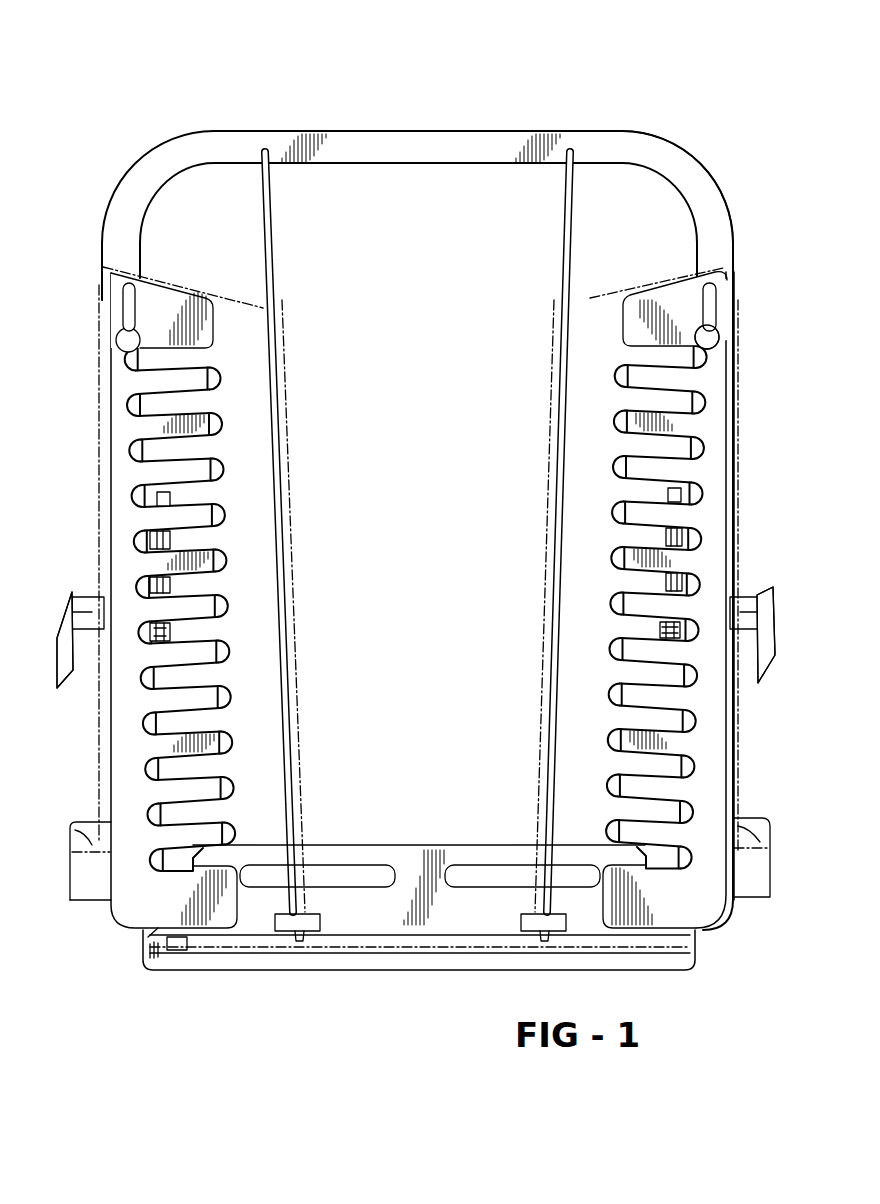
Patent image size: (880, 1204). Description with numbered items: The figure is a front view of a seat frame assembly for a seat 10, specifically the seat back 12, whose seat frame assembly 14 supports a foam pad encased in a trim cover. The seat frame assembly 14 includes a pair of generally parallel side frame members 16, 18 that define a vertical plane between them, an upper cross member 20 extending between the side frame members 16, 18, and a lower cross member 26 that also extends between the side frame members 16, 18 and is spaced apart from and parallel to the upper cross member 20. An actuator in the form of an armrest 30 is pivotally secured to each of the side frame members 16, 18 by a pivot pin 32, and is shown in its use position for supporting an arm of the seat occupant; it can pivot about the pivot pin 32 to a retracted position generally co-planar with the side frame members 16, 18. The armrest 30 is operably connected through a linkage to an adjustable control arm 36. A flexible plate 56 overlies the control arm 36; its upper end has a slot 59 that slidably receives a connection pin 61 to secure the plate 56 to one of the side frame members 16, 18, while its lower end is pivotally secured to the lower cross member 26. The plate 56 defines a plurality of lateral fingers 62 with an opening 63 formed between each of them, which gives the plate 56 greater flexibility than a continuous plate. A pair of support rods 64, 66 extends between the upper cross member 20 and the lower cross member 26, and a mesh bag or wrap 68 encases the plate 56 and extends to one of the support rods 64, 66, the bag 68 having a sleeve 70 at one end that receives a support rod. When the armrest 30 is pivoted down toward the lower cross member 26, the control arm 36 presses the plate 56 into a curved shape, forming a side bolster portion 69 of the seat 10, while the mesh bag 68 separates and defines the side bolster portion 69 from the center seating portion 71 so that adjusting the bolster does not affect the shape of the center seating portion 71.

The seat 10 is at (172, 84).
The seat back 12 is at (690, 158).
The seat frame assembly 14 is at (120, 185).
The side frame member 16 is at (100, 268).
The side frame member 18 is at (736, 250).
The upper cross member 20 is at (470, 132).
The lower cross member 26 is at (384, 962).
The armrest 30 is at (62, 660).
The pivot pin 32 is at (740, 600).
The control arm 36 is at (140, 540).
The plate 56 is at (168, 350).
The slot 59 is at (716, 305).
The connection pin 61 is at (712, 337).
The lateral fingers 62 is at (225, 466).
The opening 63 is at (197, 632).
The support rod 64 is at (290, 578).
The support rod 66 is at (567, 480).
The mesh bag or wrap 68 is at (237, 302).
The side bolster portion 69 is at (207, 203).
The sleeve 70 is at (290, 355).
The center seating portion 71 is at (400, 183).